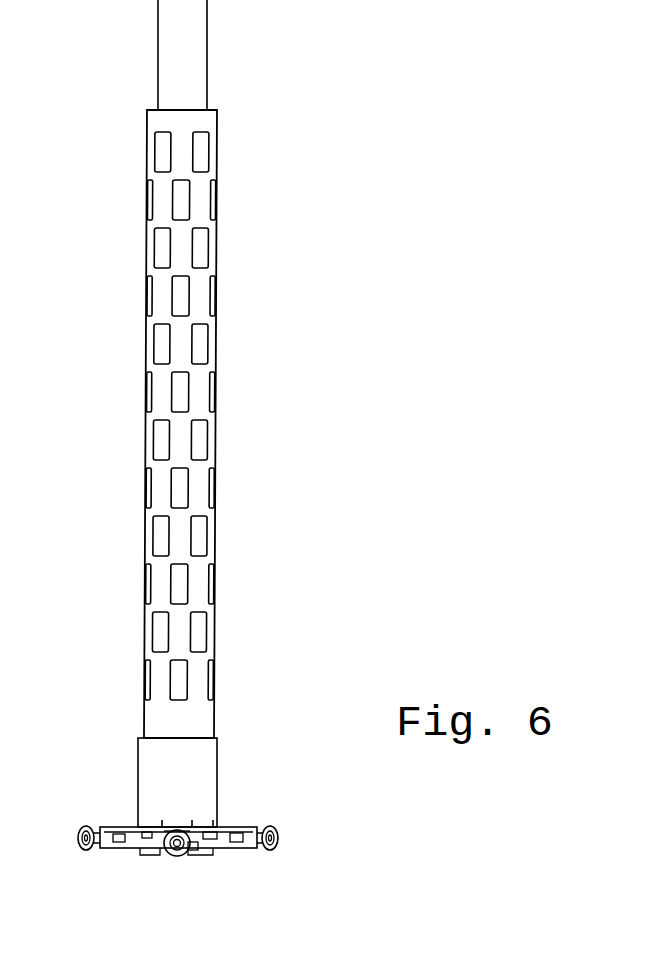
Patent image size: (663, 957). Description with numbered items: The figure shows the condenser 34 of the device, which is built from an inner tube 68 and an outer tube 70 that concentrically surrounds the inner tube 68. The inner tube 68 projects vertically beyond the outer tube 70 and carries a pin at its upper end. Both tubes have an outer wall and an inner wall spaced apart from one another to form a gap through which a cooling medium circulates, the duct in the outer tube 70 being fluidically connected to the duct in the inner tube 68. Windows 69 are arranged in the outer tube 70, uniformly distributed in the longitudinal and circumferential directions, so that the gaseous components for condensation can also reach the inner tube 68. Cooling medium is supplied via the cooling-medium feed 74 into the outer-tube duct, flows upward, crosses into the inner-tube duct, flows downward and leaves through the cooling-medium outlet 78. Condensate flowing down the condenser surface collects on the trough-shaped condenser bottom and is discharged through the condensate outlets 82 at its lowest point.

The inner tube 68 is at (190, 102).
The condenser 34 is at (218, 153).
The outer tube 70 is at (195, 207).
The windows 69 is at (197, 350).
The cooling-medium outlet 78 is at (107, 836).
The condensate outlets 82 is at (178, 856).
The cooling-medium feed 74 is at (253, 848).